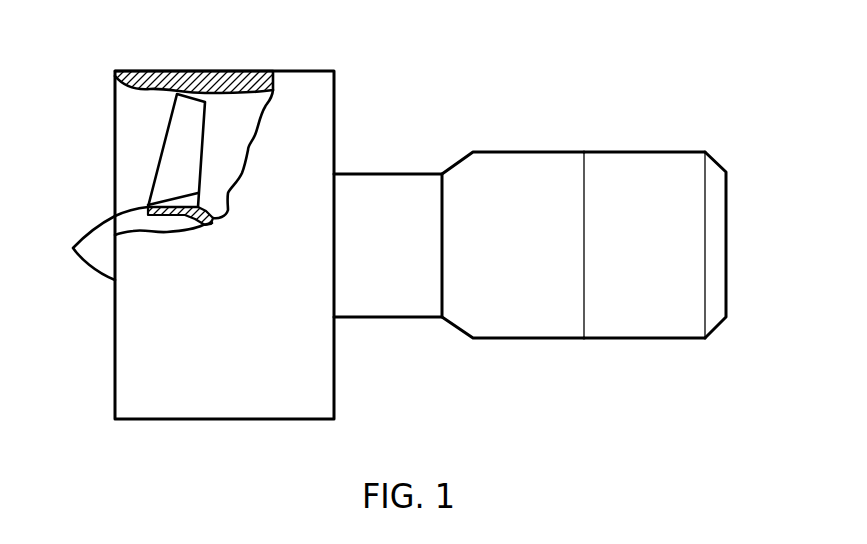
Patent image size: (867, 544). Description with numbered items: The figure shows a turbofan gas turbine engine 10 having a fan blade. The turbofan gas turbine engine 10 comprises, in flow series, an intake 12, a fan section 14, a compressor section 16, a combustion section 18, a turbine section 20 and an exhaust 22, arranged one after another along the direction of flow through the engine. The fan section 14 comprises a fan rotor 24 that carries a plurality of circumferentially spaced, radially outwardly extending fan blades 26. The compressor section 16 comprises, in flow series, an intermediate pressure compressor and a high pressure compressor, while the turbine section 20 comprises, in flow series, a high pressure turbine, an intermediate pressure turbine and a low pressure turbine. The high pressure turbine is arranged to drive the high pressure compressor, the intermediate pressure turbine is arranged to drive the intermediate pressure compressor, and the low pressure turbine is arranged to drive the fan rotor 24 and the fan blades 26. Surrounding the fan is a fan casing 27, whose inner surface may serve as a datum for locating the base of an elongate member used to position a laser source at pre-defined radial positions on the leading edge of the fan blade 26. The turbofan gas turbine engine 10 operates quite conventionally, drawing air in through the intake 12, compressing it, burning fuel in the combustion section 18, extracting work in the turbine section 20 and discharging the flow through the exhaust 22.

The turbofan gas turbine engine 10 is at (532, 44).
The intake 12 is at (115, 370).
The fan section 14 is at (215, 388).
The compressor section 16 is at (378, 287).
The combustion section 18 is at (537, 308).
The turbine section 20 is at (654, 307).
The exhaust 22 is at (727, 285).
The fan rotor 24 is at (148, 213).
The fan blade 26 is at (178, 140).
The fan casing 27 is at (228, 82).